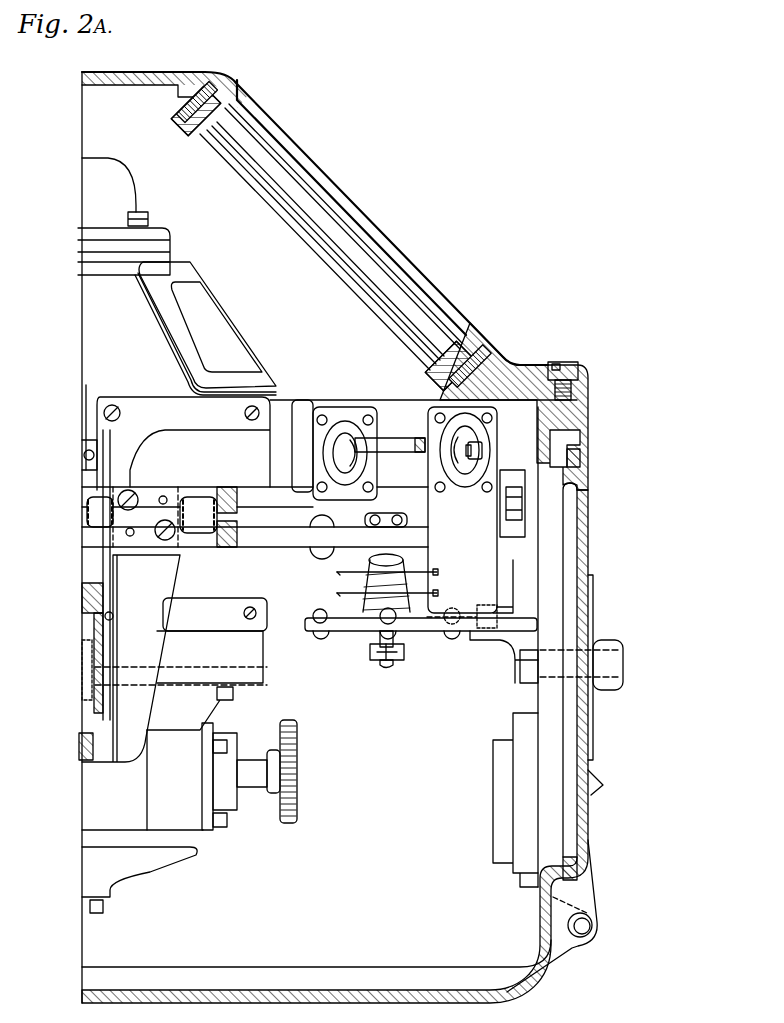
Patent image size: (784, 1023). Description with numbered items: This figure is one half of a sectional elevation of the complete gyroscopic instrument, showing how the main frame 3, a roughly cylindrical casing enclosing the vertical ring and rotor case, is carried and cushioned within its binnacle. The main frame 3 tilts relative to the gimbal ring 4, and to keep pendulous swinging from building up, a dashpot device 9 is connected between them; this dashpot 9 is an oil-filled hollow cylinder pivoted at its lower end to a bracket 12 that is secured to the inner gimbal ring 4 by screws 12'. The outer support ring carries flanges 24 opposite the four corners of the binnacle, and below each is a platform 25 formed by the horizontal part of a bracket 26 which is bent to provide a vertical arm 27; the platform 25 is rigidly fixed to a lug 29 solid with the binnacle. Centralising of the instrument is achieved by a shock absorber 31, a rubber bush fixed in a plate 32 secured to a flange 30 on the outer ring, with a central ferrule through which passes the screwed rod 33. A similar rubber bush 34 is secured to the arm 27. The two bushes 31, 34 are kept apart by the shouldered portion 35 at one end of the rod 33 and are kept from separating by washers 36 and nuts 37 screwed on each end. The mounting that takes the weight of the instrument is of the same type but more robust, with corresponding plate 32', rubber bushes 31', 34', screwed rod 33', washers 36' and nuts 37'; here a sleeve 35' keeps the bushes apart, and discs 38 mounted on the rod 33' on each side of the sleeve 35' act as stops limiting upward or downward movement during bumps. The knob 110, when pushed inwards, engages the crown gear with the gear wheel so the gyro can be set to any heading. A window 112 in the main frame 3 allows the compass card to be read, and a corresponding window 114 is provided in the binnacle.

The main frame 3 is at (153, 348).
The window 112 is at (233, 338).
The window 114 is at (347, 247).
The screws 12' is at (183, 454).
The gimbal ring 4 is at (193, 493).
The flange 30 is at (310, 410).
The plate 32 is at (345, 426).
The shock absorber 31 is at (345, 418).
The shouldered portion 35 is at (390, 402).
The vertical arm 27 is at (434, 410).
The rubber bush 34 is at (493, 389).
The washers 36 is at (515, 383).
The screwed rod 33 is at (500, 452).
The nuts 37 is at (592, 346).
The flanges 24 is at (272, 540).
The plate 32' is at (358, 551).
The nuts 37' is at (380, 633).
The rubber bush 31' is at (351, 619).
The discs 38 is at (363, 594).
The rubber bush 34' is at (374, 644).
The platform 25 is at (388, 668).
The screwed rod 33' is at (400, 674).
The washers 36' is at (412, 660).
The sleeve 35' is at (419, 620).
The bracket 26 is at (462, 603).
The lug 29 is at (508, 640).
The dashpot device 9 is at (104, 667).
The bracket 12 is at (174, 734).
The knob 110 is at (298, 748).